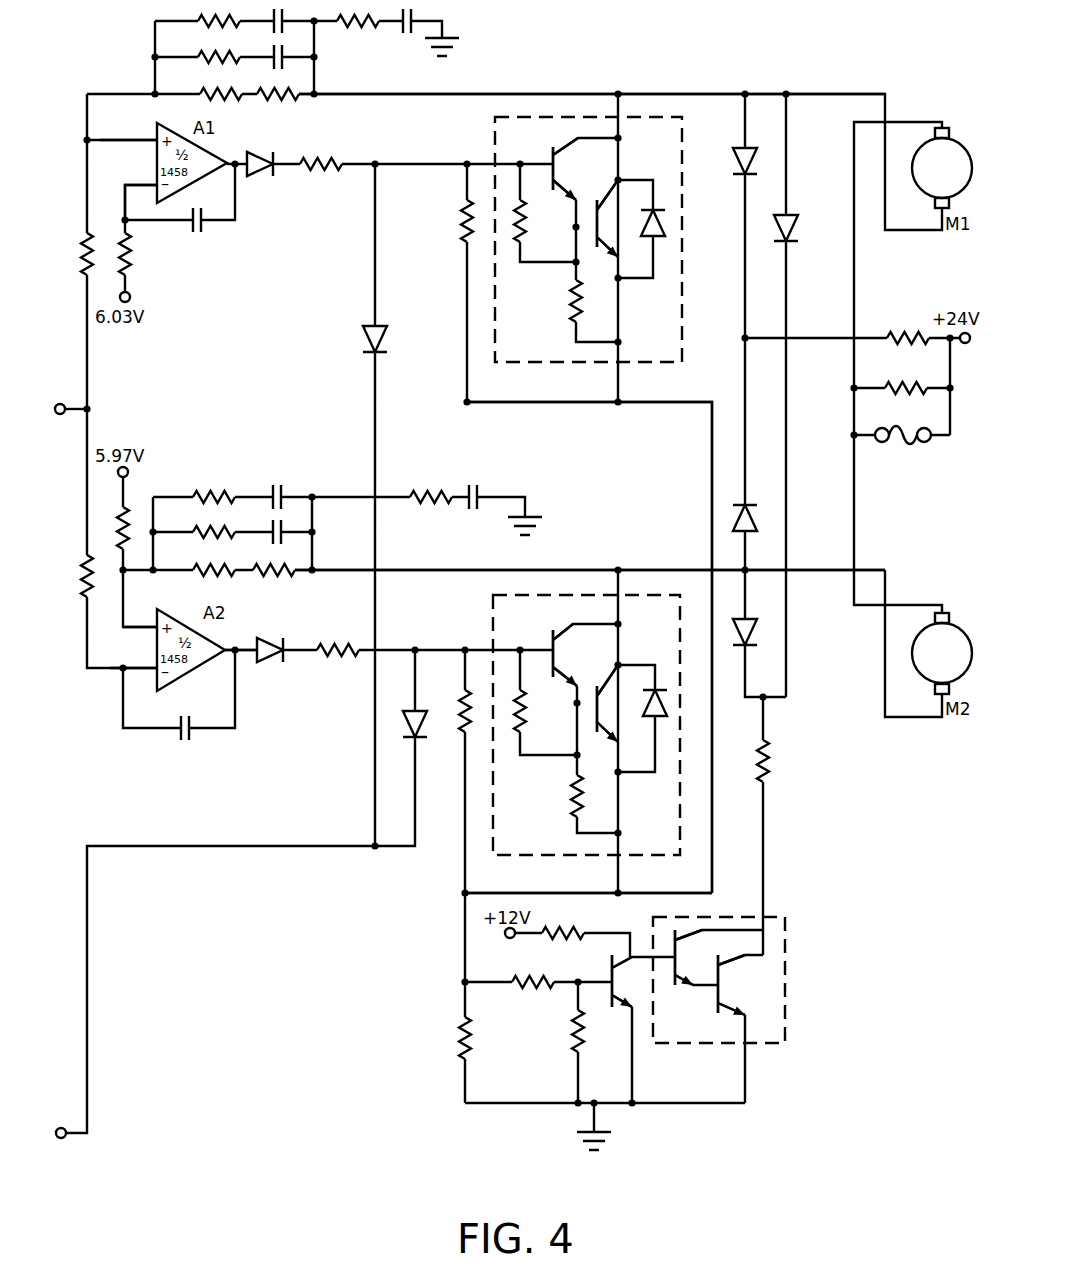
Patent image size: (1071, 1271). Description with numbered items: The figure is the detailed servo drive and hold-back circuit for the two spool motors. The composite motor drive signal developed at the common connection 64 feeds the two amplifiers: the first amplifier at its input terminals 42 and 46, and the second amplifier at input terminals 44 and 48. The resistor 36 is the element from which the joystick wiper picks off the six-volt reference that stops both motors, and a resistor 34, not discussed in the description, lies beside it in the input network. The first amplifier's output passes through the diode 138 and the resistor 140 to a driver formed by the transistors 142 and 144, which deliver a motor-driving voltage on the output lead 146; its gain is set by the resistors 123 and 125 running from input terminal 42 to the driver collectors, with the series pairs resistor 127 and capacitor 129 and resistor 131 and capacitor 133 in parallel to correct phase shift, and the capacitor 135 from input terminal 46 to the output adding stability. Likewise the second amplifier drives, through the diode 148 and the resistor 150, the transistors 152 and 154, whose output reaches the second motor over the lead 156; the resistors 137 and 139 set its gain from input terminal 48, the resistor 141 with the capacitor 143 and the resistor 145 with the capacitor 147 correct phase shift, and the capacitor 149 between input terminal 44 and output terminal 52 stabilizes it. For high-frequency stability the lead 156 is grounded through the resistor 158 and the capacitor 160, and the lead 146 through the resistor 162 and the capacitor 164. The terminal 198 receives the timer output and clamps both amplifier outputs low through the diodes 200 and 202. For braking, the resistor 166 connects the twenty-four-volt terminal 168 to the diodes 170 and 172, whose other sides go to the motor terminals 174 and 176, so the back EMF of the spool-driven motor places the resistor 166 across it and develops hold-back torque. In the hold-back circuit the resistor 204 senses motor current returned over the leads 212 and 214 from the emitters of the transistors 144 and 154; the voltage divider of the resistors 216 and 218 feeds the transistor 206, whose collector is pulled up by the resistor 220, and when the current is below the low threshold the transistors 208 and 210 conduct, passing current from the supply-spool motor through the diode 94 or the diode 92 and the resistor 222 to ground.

The resistor 34 is at (84, 250).
The resistor 36 is at (80, 578).
The input terminal 42 is at (133, 145).
The input signal terminal 44 is at (150, 666).
The input terminal 46 is at (125, 187).
The input terminal 48 is at (142, 608).
The output terminal 52 is at (232, 662).
The common connection 64 is at (74, 414).
The diode 92 is at (802, 228).
The diode 94 is at (766, 628).
The resistor 123 is at (204, 100).
The resistor 125 is at (306, 98).
The resistor 127 is at (208, 68).
The capacitor 129 is at (274, 68).
The resistor 131 is at (204, 32).
The capacitor 133 is at (270, 32).
The capacitor 135 is at (190, 232).
The resistor 137 is at (213, 561).
The diode 138 is at (262, 142).
The resistor 139 is at (280, 577).
The resistor 140 is at (308, 160).
The resistor 141 is at (213, 525).
The transistor 142 is at (561, 170).
The capacitor 143 is at (304, 534).
The transistor 144 is at (598, 230).
The resistor 145 is at (213, 488).
The output lead 146 is at (706, 92).
The capacitor 147 is at (297, 490).
The diode 148 is at (264, 666).
The capacitor 149 is at (174, 714).
The resistor 150 is at (326, 664).
The transistor 152 is at (561, 657).
The transistor 154 is at (598, 706).
The lead 156 is at (660, 567).
The resistor 158 is at (434, 508).
The capacitor 160 is at (492, 514).
The resistor 162 is at (368, 26).
The capacitor 164 is at (400, 30).
The resistor 166 is at (908, 331).
The terminal 168 is at (946, 355).
The diode 170 is at (730, 162).
The diode 172 is at (764, 514).
The terminal 174 is at (926, 240).
The terminal 176 is at (930, 721).
The terminal 198 is at (64, 1138).
The diode 200 is at (361, 339).
The diode 202 is at (434, 712).
The resistor 204 is at (461, 1032).
The transistor 206 is at (603, 970).
The transistor 208 is at (694, 957).
The transistor 210 is at (730, 972).
The lead 212 is at (686, 400).
The lead 214 is at (604, 882).
The resistor 216 is at (540, 991).
The resistor 218 is at (574, 1028).
The resistor 220 is at (569, 928).
The resistor 222 is at (771, 758).